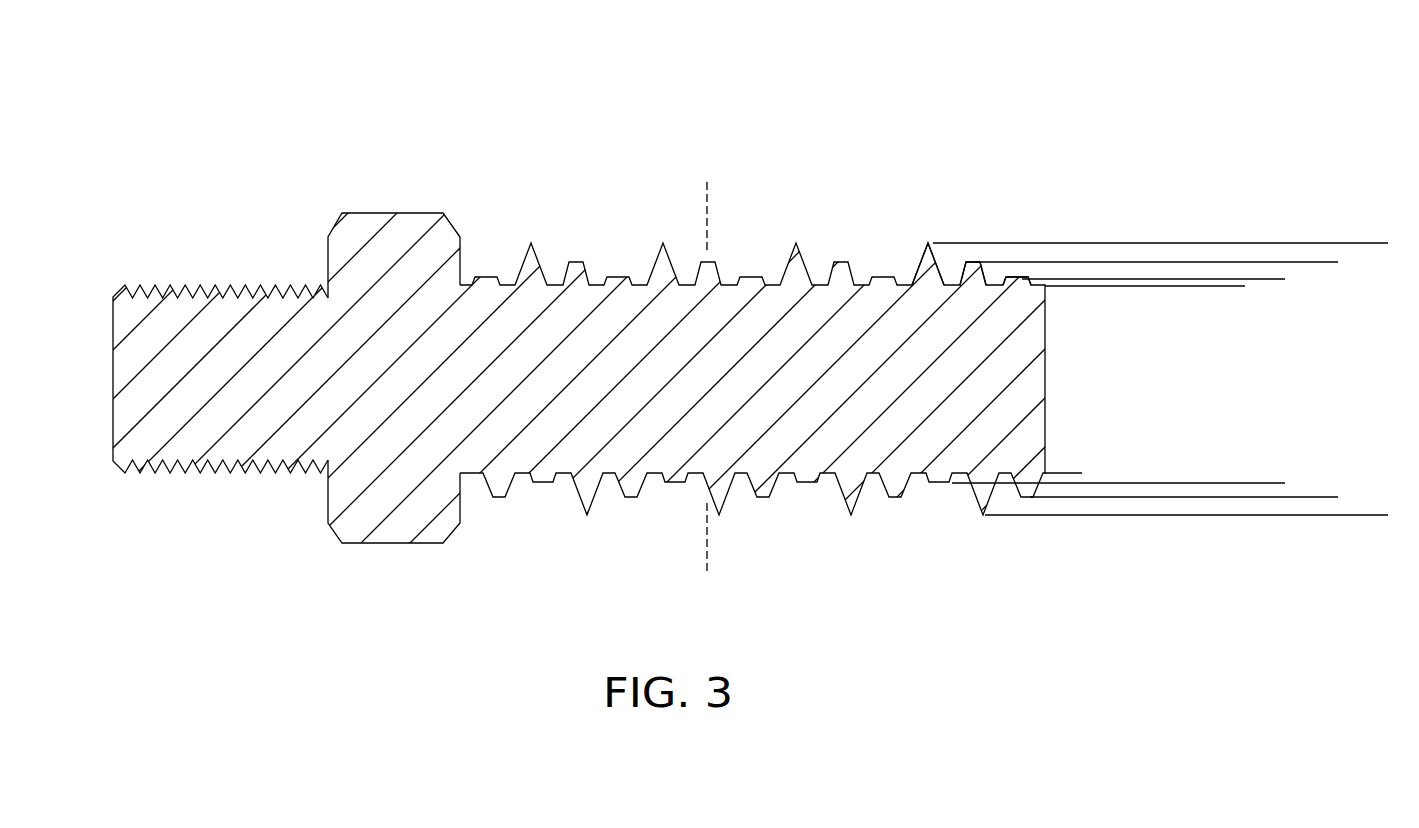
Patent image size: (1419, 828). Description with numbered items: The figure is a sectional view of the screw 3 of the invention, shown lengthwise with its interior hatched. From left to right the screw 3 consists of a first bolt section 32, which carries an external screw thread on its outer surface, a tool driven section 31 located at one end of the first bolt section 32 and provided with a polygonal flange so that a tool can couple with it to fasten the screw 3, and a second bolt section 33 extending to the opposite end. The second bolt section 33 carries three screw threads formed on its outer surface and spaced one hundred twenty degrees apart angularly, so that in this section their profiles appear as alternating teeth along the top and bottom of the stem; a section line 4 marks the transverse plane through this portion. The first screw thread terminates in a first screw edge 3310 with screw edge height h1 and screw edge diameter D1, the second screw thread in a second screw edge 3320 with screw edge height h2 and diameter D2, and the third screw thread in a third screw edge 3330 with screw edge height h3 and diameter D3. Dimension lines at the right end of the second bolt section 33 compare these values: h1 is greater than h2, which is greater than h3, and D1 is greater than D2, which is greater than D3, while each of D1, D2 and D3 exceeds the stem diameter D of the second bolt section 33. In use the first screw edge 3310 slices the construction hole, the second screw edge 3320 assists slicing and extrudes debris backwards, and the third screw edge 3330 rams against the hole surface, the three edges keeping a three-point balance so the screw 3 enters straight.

The screw 3 is at (670, 293).
The tool driven section 31 is at (387, 213).
The first bolt section 32 is at (205, 287).
The second bolt section 33 is at (728, 295).
The first screw edge 3310 is at (928, 243).
The second screw edge 3320 is at (973, 263).
The third screw edge 3330 is at (1020, 278).
The section line 4- 4 is at (682, 193).
The stem diameter D is at (1079, 286).
The screw edge diameter of the first screw thread D1 is at (1387, 243).
The screw edge diameter of the second screw thread D2 is at (1336, 262).
The screw edge diameter of the third screw thread D3 is at (1283, 279).
The screw edge height of the first screw thread h1 is at (1240, 215).
The screw edge height of the second screw thread h2 is at (1178, 247).
The screw edge height of the third screw thread h3 is at (1115, 262).